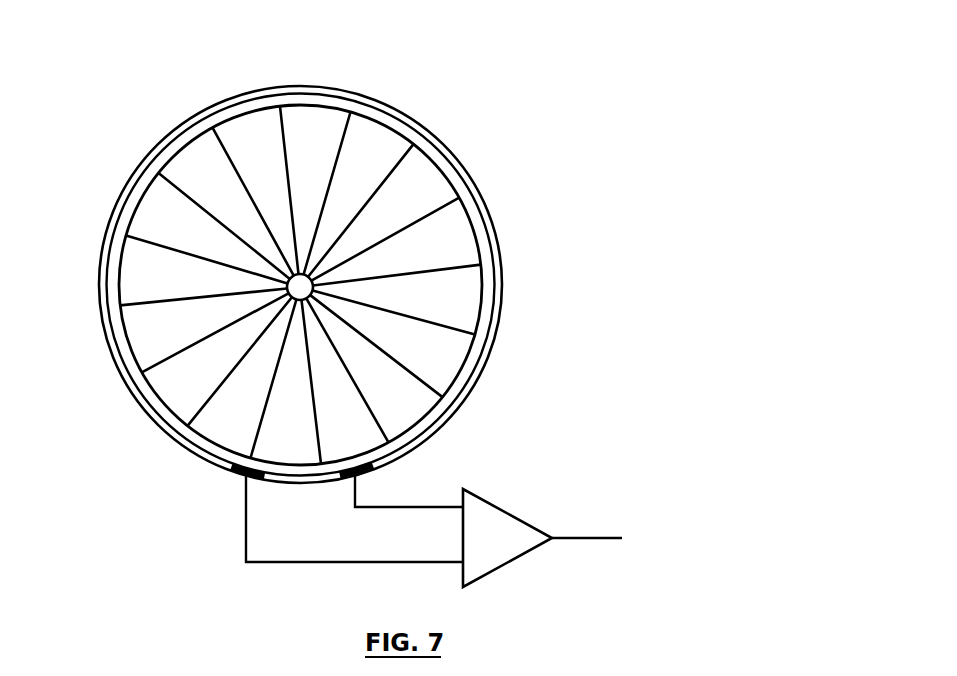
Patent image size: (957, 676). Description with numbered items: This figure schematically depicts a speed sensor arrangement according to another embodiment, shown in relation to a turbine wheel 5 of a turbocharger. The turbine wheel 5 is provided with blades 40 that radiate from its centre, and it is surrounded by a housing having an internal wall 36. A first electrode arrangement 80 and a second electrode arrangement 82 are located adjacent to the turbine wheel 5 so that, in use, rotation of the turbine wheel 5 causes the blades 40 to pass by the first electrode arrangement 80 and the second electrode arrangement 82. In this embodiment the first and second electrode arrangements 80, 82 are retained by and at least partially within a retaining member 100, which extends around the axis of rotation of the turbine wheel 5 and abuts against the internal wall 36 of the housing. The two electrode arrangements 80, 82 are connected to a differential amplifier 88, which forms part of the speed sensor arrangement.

The turbine wheel 5 is at (313, 268).
The internal wall 36 is at (435, 133).
The blades 40 is at (450, 248).
The first electrode arrangement 80 is at (238, 477).
The second electrode arrangement 82 is at (362, 481).
The differential amplifier 88 is at (502, 550).
The retaining member 100 is at (115, 336).